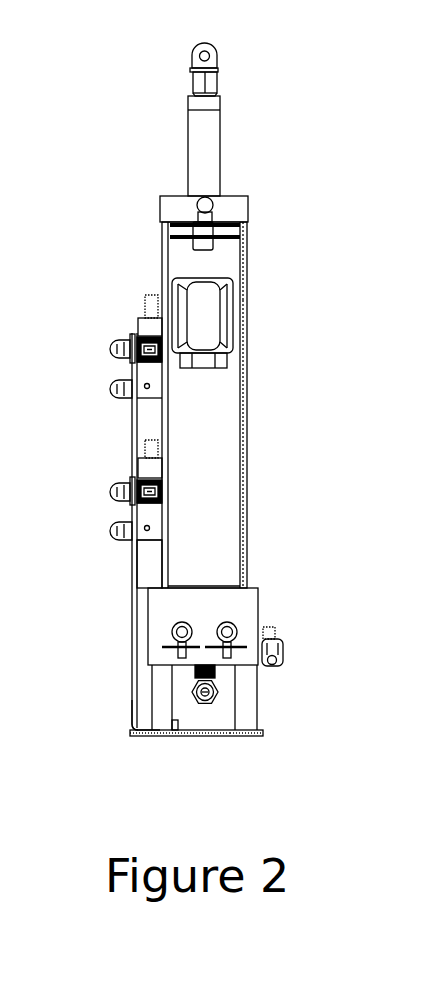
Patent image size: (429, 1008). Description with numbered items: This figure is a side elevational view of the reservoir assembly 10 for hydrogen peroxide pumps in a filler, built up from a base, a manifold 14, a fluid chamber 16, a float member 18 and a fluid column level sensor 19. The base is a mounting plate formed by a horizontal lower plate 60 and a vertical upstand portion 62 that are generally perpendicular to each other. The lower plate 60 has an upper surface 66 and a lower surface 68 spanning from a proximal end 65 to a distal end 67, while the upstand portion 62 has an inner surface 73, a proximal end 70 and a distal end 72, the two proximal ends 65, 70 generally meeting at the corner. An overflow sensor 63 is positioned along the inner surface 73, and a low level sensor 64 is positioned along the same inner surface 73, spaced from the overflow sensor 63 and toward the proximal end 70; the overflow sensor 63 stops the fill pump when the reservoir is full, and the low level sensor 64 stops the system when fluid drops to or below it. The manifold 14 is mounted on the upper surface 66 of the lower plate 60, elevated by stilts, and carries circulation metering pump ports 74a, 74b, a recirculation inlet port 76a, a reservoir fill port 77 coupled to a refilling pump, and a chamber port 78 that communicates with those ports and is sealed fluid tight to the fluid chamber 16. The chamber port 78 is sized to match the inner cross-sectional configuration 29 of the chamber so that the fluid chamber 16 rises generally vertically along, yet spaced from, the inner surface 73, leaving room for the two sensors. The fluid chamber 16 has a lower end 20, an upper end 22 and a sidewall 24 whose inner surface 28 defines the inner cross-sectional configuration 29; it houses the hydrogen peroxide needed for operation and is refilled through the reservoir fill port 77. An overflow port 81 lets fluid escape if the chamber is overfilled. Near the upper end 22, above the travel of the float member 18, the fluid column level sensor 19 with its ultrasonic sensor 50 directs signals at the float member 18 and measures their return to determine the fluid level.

The reservoir assembly 10 is at (336, 442).
The manifold 14 is at (260, 604).
The fluid chamber 16 is at (241, 405).
The float member 18 is at (236, 323).
The fluid column level sensor 19 is at (246, 148).
The lower end 20 is at (221, 582).
The upper end 22 is at (258, 237).
The sidewall 24 is at (243, 287).
The inner surface 28 is at (241, 387).
The inner cross-sectional configuration 29 is at (204, 467).
The ultrasonic sensor 50 is at (221, 72).
The lower plate 60 is at (232, 772).
The upstand portion 62 is at (133, 518).
The overflow sensor 63 is at (131, 377).
The low level sensor 64 is at (125, 445).
The proximal end 65 is at (135, 745).
The upper surface 66 is at (226, 727).
The distal end 67 is at (262, 748).
The lower surface 68 is at (206, 736).
The proximal end 70 is at (125, 719).
The distal end 72 is at (121, 330).
The inner surface 73 is at (133, 415).
The circulation metering pump port 74a is at (171, 623).
The circulation metering pump port 74b is at (229, 621).
The recirculation inlet port 76a is at (284, 661).
The reservoir fill port 77 is at (184, 688).
The chamber port 78 is at (156, 586).
The overflow port 81 is at (175, 238).